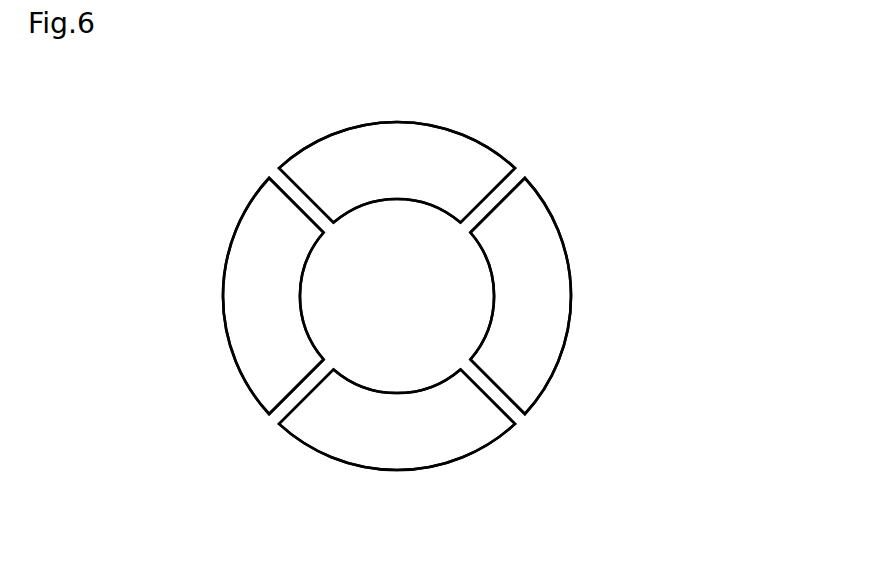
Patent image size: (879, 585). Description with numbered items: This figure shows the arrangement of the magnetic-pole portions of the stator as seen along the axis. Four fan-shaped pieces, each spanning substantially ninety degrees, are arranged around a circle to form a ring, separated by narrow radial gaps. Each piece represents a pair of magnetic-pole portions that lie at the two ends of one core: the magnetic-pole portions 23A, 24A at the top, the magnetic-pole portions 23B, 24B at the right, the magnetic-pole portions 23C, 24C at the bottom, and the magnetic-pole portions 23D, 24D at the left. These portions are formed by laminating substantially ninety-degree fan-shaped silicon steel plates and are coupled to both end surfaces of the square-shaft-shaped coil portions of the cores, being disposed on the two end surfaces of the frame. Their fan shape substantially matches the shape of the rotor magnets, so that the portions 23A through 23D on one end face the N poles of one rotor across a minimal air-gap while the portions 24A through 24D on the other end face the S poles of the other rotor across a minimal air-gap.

The magnetic-pole portion 23A is at (449, 98).
The magnetic-pole portion 24A is at (397, 172).
The magnetic-pole portion 23B is at (558, 289).
The magnetic-pole portion 24B is at (520, 296).
The magnetic-pole portion 23C is at (427, 453).
The magnetic-pole portion 24C is at (397, 419).
The magnetic-pole portion 23D is at (240, 291).
The magnetic-pole portion 24D is at (273, 296).